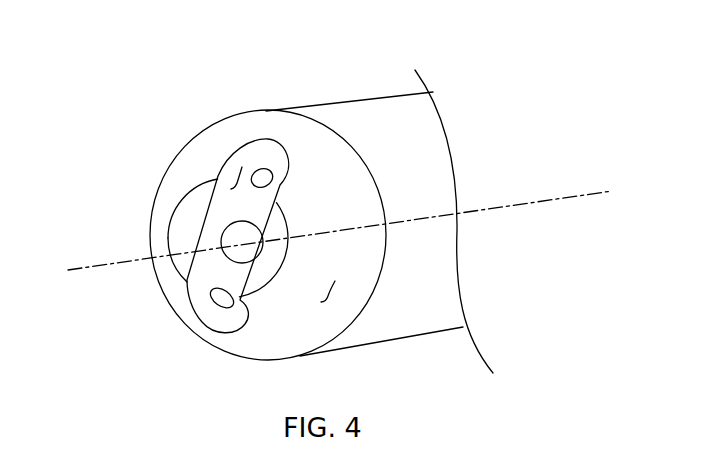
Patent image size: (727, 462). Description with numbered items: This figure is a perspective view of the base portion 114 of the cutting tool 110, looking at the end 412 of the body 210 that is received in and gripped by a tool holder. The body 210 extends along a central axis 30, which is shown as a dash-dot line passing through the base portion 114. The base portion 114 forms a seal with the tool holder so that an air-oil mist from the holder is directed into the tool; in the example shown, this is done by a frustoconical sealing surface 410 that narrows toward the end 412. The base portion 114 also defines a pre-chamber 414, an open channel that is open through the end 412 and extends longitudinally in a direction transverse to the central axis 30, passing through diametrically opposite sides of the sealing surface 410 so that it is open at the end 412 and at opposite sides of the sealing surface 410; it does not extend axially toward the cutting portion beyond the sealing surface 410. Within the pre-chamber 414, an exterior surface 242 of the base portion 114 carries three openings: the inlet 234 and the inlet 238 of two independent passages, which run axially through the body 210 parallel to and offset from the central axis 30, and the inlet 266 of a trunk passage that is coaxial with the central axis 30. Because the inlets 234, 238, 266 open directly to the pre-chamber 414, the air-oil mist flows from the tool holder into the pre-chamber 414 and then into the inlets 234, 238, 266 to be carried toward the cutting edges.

The cutting tool 110 is at (103, 56).
The base portion 114 is at (308, 112).
The body 210 is at (370, 98).
The central axis 30 is at (523, 203).
The end 412 is at (180, 220).
The pre-chamber 414 is at (198, 272).
The exterior surface 242 is at (235, 173).
The inlet 266 is at (243, 227).
The inlet 234 is at (257, 170).
The inlet 238 is at (213, 293).
The frustoconical sealing surface 410 is at (330, 295).